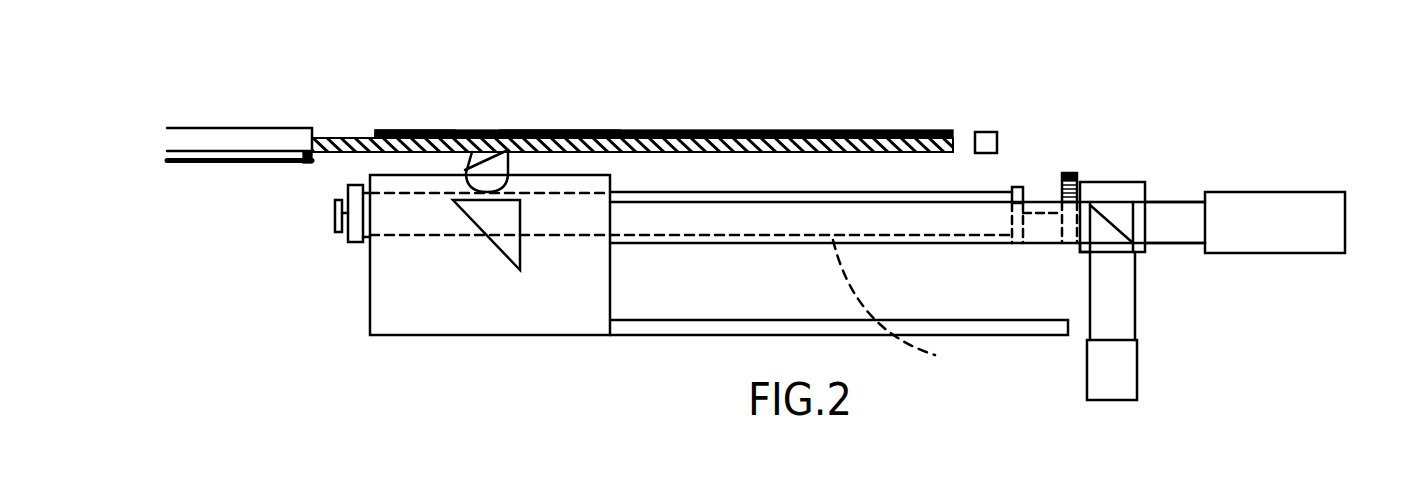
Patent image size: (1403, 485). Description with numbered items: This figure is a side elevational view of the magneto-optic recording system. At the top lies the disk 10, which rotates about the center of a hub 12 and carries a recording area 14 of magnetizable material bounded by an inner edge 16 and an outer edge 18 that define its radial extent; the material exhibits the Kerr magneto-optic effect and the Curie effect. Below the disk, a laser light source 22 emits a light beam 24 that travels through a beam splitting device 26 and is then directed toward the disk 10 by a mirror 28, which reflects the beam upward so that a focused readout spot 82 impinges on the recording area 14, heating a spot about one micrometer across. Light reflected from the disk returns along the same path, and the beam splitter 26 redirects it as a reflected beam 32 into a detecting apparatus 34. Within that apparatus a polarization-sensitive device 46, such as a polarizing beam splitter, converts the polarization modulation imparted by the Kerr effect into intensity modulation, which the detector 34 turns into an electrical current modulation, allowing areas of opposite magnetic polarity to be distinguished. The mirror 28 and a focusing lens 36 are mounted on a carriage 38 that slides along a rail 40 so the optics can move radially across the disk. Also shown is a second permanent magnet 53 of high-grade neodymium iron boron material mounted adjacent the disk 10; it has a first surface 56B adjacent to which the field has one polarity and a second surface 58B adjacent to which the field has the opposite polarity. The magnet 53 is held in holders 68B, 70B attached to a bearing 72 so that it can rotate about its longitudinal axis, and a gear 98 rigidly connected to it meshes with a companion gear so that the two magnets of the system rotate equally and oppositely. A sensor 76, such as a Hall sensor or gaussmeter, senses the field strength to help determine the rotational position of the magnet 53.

The disk 10 is at (342, 137).
The hub 12 is at (323, 137).
The recording area 14 is at (837, 132).
The inner edge 16 is at (371, 137).
The outer edge 18 is at (965, 133).
The laser light source 22 is at (1267, 192).
The light beam 24 is at (1173, 202).
The beam splitting device 26 is at (1078, 250).
The mirror 28 is at (490, 252).
The reflected beam 32 is at (1123, 288).
The detecting apparatus 34 is at (1137, 355).
The lens 36 is at (549, 130).
The carriage 38 is at (612, 300).
The rail 40 is at (735, 337).
The polarization-sensitive device 46 is at (1112, 205).
The second permanent magnet 53 is at (870, 192).
The first surface of second magnet 56B is at (802, 192).
The second surface of second magnet 58B is at (913, 307).
The holder 68B is at (348, 238).
The holder 70B is at (1070, 170).
The bearing 72 is at (336, 223).
The sensor 76 is at (1020, 187).
The readout spot 82 is at (497, 178).
The gear 98 is at (1117, 182).